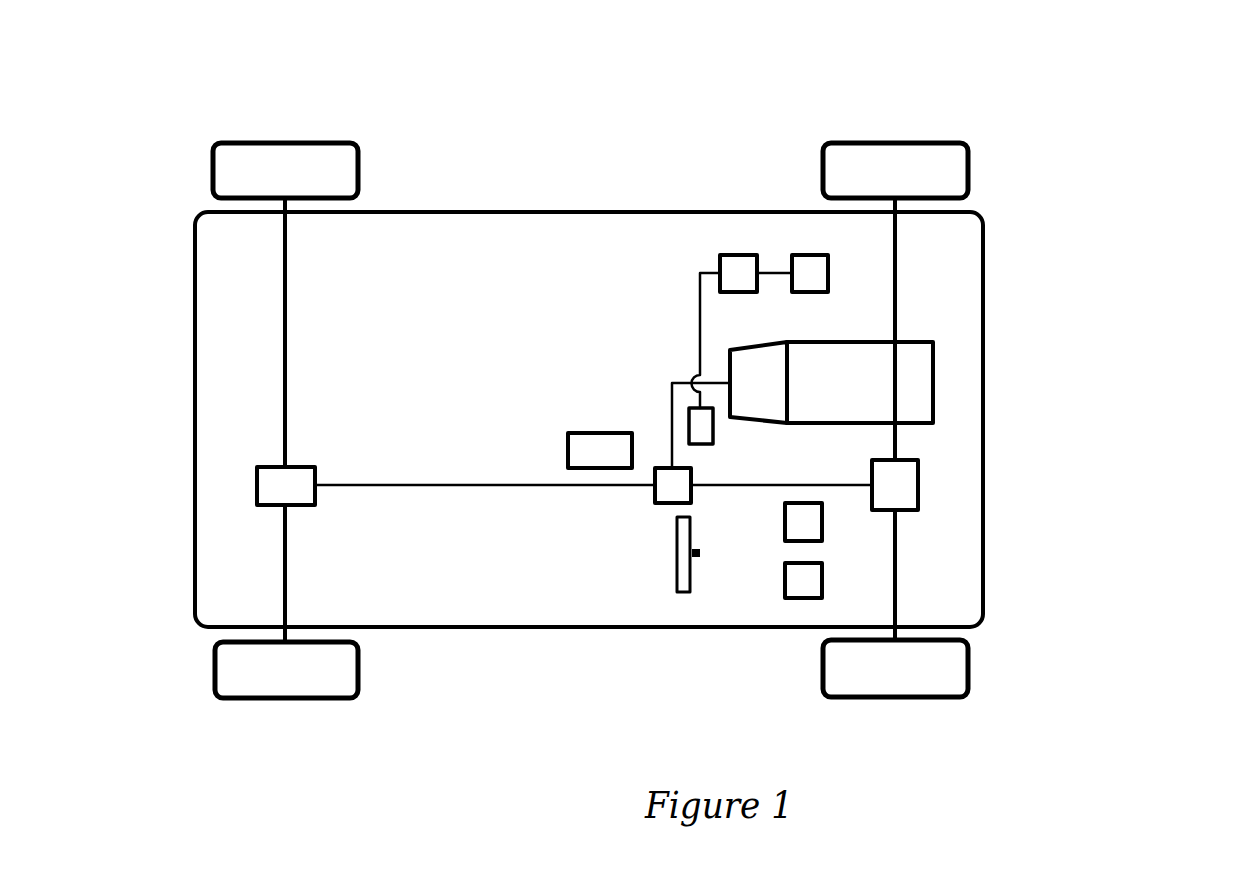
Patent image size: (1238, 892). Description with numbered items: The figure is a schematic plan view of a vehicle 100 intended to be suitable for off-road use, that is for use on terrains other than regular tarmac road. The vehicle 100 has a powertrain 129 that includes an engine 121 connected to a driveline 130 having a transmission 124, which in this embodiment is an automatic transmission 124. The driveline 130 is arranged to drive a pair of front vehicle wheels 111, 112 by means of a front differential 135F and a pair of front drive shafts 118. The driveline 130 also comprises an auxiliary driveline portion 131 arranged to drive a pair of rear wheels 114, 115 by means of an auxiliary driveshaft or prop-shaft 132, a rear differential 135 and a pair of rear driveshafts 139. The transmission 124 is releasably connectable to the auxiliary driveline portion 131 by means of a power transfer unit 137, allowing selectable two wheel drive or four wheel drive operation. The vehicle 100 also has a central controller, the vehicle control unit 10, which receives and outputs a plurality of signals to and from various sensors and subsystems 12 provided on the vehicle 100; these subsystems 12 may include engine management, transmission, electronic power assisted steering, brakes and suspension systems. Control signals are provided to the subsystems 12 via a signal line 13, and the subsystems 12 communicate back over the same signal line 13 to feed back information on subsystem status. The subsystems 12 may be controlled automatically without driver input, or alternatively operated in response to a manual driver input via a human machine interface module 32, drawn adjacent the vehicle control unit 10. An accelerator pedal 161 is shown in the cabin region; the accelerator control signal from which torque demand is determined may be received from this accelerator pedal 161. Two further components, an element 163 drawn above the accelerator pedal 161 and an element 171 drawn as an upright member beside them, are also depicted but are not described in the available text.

The vehicle 100 is at (1090, 164).
The vehicle control unit 10 is at (728, 256).
The vehicle subsystems 12 is at (810, 256).
The signal line 13 is at (771, 272).
The human machine interface module 32 is at (687, 417).
The front vehicle wheel 111 is at (946, 155).
The front vehicle wheel 112 is at (945, 685).
The rear wheel 114 is at (244, 155).
The rear wheel 115 is at (245, 685).
The front drive shafts 118 is at (897, 258).
The engine 121 is at (920, 371).
The transmission 124 is at (770, 342).
The powertrain 129 is at (1092, 417).
The driveline 130 is at (1091, 640).
The auxiliary driveline portion 131 is at (470, 668).
The prop-shaft 132 is at (435, 486).
The rear differential 135 is at (263, 486).
The front differential 135F is at (910, 485).
The power transfer unit 137 is at (667, 500).
The rear driveshafts 139 is at (283, 318).
The accelerator pedal 161 is at (802, 591).
The brake pedal 163 is at (795, 526).
The shift lever 171 is at (685, 593).